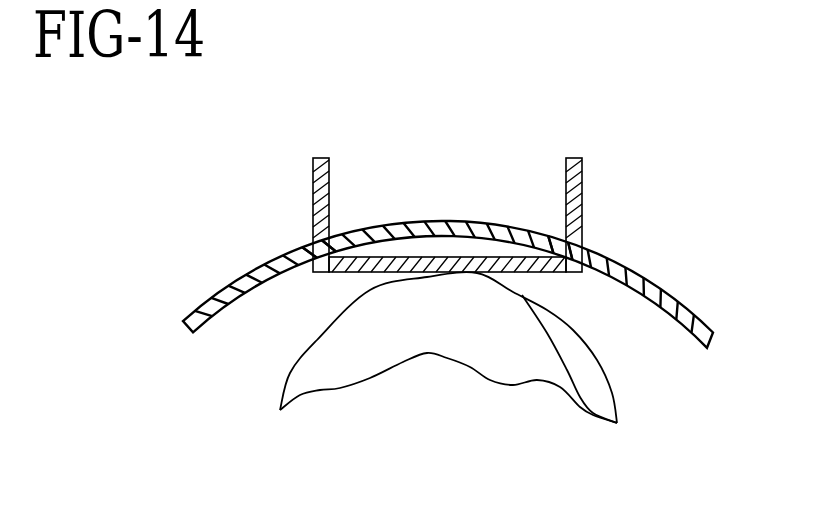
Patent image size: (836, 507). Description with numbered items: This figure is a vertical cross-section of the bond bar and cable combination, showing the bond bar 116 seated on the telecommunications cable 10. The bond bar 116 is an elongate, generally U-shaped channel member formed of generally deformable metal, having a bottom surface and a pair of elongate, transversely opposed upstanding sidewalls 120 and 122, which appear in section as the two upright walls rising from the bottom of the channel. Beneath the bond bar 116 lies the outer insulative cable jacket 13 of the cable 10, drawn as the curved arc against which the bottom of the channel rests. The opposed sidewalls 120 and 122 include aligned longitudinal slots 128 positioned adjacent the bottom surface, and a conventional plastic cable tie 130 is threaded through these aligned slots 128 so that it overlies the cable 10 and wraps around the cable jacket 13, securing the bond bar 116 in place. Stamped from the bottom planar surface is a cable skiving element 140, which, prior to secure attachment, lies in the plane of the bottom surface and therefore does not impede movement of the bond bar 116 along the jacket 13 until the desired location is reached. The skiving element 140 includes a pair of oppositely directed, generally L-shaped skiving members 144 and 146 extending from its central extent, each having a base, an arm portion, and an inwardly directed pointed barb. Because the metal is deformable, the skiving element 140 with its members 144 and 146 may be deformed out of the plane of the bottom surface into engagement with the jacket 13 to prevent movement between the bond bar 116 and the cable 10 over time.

The telecommunications cable 10 is at (452, 376).
The outer insulative cable jacket 13 is at (404, 373).
The bond bar 116 is at (398, 185).
The upstanding sidewall 120 is at (566, 178).
The upstanding sidewall 122 is at (313, 177).
The longitudinal slots 128 is at (313, 237).
The plastic cable tie 130 is at (668, 292).
The cable skiving element 140 is at (448, 232).
The skiving member 144 is at (522, 262).
The skiving member 146 is at (388, 263).